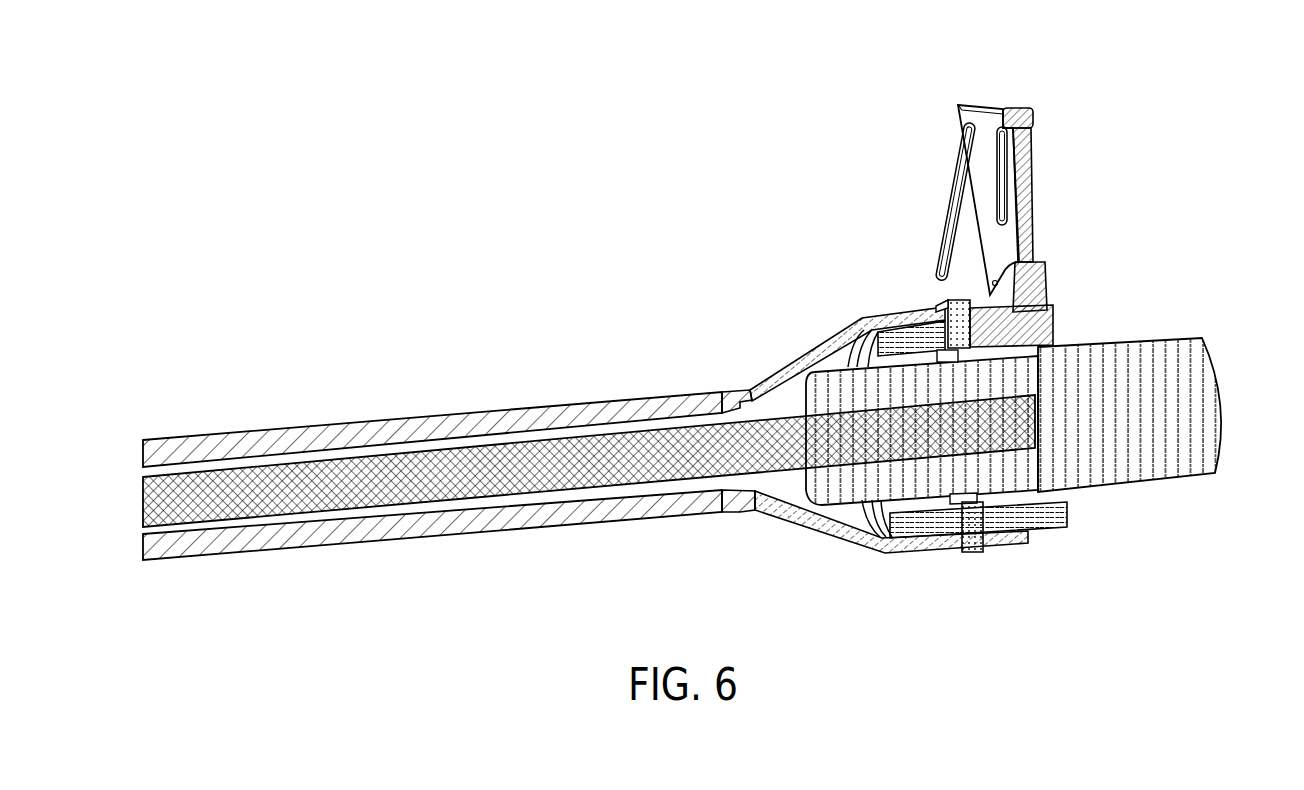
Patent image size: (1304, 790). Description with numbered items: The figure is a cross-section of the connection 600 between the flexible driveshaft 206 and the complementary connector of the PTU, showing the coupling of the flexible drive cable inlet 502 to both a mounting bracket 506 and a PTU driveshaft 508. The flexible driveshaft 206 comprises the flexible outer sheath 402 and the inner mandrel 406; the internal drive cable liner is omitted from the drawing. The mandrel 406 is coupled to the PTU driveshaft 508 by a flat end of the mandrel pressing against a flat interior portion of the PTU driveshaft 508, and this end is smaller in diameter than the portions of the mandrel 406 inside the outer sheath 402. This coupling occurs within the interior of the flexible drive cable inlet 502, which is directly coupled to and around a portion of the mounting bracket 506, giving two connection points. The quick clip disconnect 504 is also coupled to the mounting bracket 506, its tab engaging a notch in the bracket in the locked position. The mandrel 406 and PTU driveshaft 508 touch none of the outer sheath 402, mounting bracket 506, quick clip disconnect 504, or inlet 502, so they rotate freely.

The cable assembly 600 is at (718, 332).
The flexible driveshaft 206 is at (718, 412).
The flexible outer sheath 402 is at (465, 533).
The mandrel 406 is at (598, 460).
The flexible drive cable inlet 502 is at (903, 307).
The quick clip disconnect 504 is at (974, 553).
The mounting bracket 506 is at (1036, 183).
The PTU driveshaft 508 is at (1226, 402).